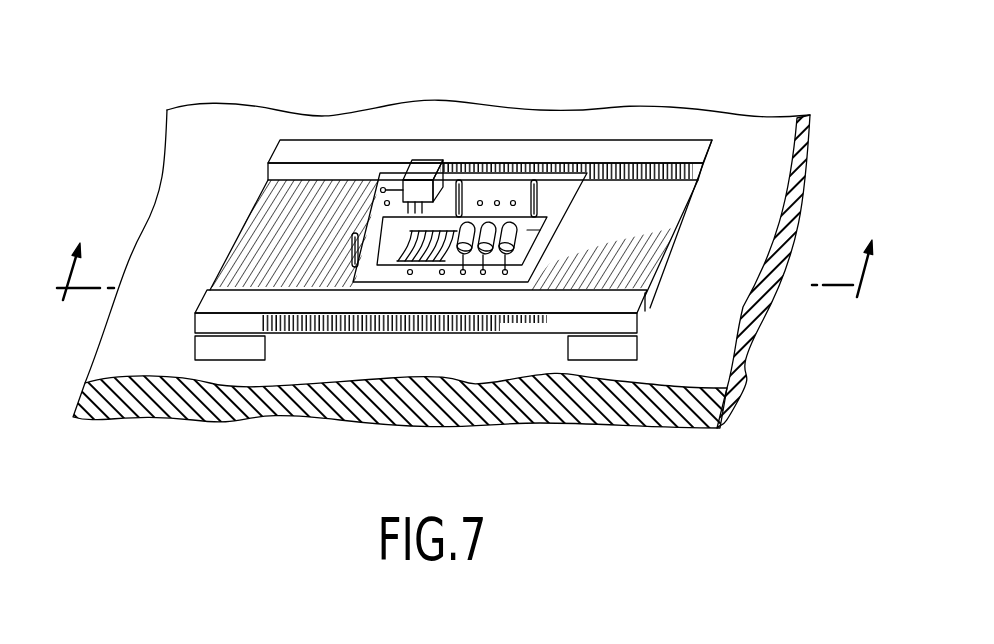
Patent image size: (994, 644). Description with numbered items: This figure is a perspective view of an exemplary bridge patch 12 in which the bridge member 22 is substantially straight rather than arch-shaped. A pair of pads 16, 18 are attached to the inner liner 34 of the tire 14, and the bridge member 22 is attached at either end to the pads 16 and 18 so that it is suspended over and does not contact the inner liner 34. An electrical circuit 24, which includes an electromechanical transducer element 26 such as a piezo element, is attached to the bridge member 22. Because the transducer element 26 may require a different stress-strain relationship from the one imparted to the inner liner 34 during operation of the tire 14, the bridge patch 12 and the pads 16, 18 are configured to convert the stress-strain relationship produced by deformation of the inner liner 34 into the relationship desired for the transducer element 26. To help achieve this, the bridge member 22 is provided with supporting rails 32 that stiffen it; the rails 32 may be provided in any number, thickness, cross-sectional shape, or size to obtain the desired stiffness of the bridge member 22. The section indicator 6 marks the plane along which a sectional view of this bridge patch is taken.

The bridge patch 12 is at (298, 124).
The tire 14 is at (688, 420).
The pad 16 is at (227, 352).
The pad 18 is at (597, 348).
The bridge member 22 is at (655, 195).
The electrical circuit 24 is at (485, 225).
The electromechanical transducer element 26 is at (422, 165).
The supporting rail 32 is at (578, 148).
The inner liner 34 is at (764, 157).
The section line 6- 6 is at (465, 271).